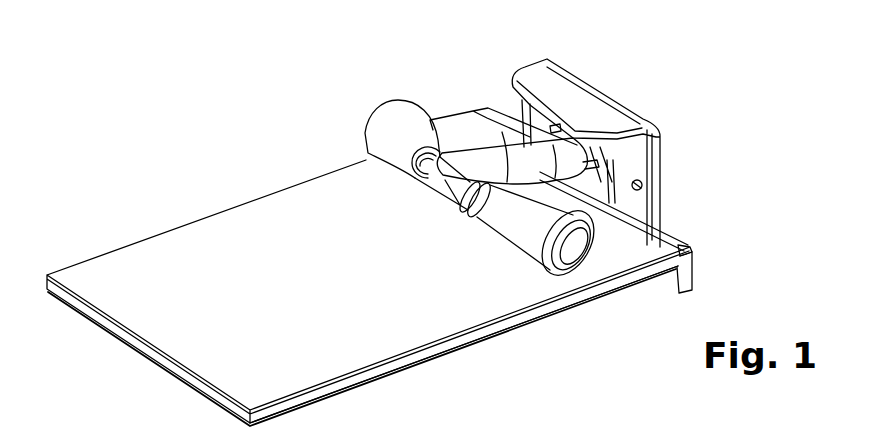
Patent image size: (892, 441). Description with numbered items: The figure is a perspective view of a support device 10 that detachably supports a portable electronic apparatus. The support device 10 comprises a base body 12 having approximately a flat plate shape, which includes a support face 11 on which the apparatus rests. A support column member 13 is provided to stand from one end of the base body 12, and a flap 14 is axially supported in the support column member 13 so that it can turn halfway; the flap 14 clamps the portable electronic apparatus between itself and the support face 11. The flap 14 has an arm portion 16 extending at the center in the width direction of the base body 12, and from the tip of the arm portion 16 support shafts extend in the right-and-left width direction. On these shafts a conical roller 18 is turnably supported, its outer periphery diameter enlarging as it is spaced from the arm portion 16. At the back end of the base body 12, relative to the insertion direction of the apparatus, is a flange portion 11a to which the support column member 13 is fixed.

The support device 10 is at (258, 47).
The support face 11 is at (170, 243).
The flange portion 11a is at (675, 237).
The base body 12 is at (399, 372).
The support column member 13 is at (615, 100).
The flap 14 is at (467, 140).
The arm portion 16 is at (515, 152).
The conical roller 18 is at (387, 132).